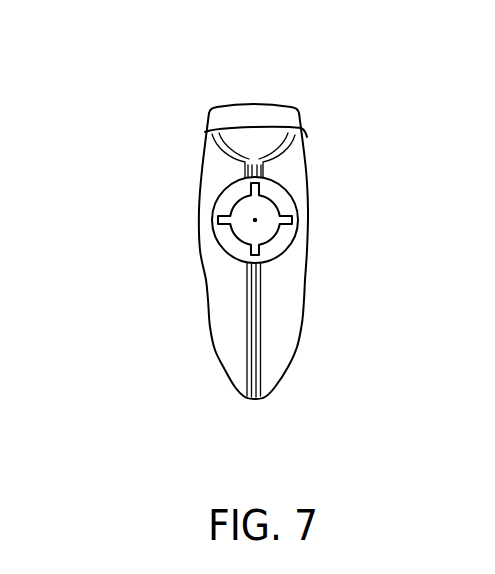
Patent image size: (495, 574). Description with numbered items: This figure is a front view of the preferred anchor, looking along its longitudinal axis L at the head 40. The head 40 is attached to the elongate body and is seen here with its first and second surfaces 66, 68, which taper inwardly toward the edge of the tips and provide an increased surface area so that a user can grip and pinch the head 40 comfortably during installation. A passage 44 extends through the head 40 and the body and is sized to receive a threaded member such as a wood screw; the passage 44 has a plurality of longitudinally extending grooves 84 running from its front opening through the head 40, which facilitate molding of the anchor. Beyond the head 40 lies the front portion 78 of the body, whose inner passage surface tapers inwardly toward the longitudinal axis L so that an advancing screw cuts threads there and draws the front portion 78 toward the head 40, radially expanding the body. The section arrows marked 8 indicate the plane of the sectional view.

The head 40 is at (207, 90).
The section line for FIG. 8 is at (252, 97).
The first surface 66 is at (203, 168).
The second surface 68 is at (310, 188).
The passage 44 is at (252, 229).
The longitudinally extending grooves 84 is at (263, 246).
The longitudinal axis L is at (255, 220).
The front portion 78 is at (255, 358).